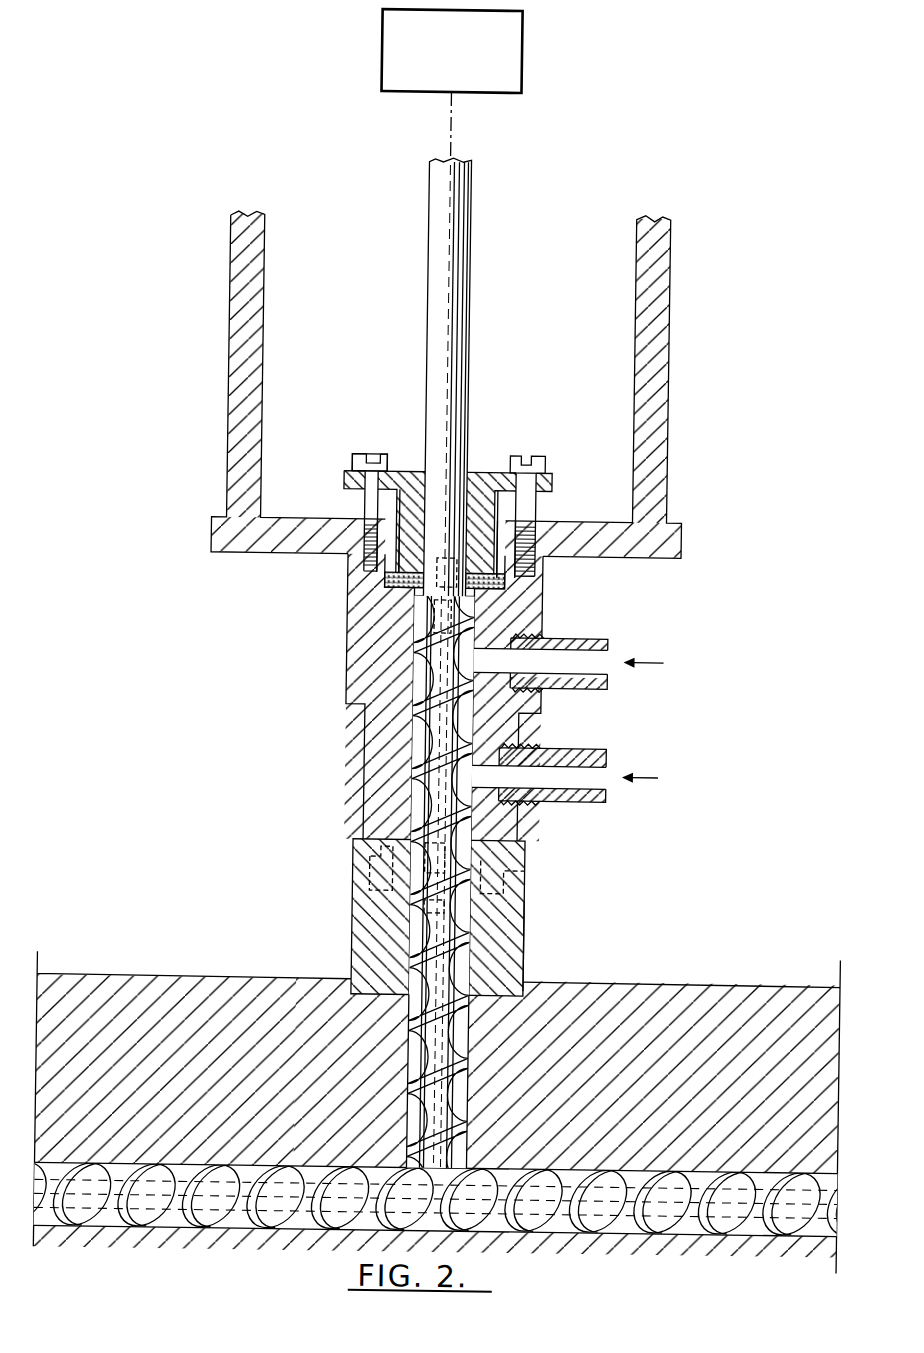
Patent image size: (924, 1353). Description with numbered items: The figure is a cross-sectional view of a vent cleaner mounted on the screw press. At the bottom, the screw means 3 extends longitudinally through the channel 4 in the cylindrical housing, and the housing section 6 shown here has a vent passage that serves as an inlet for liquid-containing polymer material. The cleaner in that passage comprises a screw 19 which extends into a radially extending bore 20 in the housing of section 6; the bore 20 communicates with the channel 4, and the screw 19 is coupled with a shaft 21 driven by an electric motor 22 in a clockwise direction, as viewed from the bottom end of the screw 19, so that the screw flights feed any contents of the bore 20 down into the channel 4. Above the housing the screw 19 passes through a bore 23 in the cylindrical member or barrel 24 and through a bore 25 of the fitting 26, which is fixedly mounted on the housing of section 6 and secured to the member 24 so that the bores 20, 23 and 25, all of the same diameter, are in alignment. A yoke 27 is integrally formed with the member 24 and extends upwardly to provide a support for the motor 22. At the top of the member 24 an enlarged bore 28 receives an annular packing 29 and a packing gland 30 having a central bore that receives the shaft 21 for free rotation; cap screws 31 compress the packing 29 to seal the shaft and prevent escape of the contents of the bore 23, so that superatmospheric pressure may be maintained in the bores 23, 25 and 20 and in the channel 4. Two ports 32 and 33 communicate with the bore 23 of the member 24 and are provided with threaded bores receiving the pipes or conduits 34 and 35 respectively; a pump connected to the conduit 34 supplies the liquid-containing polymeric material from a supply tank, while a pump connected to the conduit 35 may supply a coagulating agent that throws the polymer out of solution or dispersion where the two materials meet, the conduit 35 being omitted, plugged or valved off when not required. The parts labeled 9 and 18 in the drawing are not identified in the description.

The screw means 3 is at (614, 1207).
The channel 4 is at (511, 1166).
The section 6 is at (690, 958).
The screws 9 is at (549, 572).
The bearing block 18 is at (336, 843).
The screw 19 is at (460, 918).
The radially extending bore 20 is at (490, 1068).
The shaft 21 is at (421, 300).
The electric motor 22 is at (513, 64).
The bore 23 is at (470, 730).
The cylindrical member or barrel 24 is at (522, 603).
The bore 25 is at (468, 975).
The fitting 26 is at (526, 945).
The yoke 27 is at (200, 368).
The enlarged bore 28 is at (383, 578).
The annular packing 29 is at (408, 594).
The packing gland 30 is at (410, 472).
The cap screws 31 is at (352, 449).
The port 32 is at (493, 660).
The port 33 is at (484, 780).
The pipe or conduit 34 is at (583, 640).
The pipe or conduit 35 is at (568, 752).